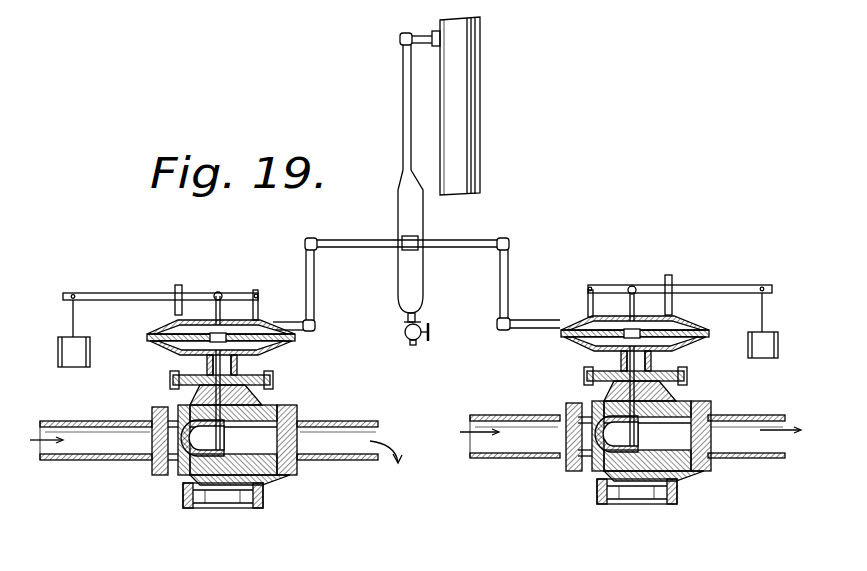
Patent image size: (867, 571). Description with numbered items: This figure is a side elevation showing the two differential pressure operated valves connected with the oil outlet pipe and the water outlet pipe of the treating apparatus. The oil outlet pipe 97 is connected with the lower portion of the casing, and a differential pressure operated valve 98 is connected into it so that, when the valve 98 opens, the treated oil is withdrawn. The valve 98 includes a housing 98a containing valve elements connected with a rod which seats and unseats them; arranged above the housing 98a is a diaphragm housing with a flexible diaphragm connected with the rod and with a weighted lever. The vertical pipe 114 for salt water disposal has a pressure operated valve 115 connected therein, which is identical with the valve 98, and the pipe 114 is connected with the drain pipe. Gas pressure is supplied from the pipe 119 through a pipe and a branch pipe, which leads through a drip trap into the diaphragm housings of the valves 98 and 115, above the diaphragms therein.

The pipe 119 is at (472, 94).
The oil outlet pipe 97 is at (79, 420).
The differential pressure operated valve 98 is at (193, 472).
The housing 98a is at (258, 504).
The vertical pipe 114 is at (515, 398).
The pressure operated valve 115 is at (676, 403).